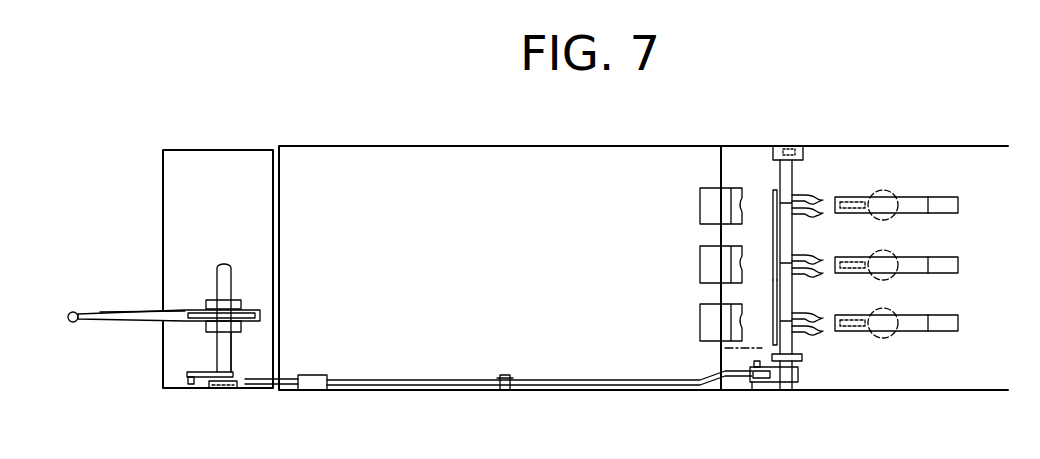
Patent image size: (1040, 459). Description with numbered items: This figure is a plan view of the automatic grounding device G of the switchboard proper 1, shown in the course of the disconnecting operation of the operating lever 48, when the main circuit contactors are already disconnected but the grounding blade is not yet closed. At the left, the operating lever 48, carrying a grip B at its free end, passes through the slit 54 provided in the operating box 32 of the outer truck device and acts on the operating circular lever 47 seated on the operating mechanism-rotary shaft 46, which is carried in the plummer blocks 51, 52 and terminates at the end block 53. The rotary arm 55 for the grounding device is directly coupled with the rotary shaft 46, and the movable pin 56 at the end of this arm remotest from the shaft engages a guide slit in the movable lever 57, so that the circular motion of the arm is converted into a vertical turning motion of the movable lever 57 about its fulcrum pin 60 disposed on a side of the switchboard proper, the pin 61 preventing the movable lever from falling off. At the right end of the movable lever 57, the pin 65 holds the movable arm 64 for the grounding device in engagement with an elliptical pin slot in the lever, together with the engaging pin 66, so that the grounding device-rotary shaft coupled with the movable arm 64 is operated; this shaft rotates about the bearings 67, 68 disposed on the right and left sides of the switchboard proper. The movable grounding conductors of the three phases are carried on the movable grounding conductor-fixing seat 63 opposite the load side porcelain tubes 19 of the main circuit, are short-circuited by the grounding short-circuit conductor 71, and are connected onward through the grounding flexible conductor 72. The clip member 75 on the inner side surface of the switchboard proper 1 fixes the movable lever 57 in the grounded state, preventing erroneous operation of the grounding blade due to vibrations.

The switchboard proper 1 is at (470, 146).
The operating box 32 is at (163, 218).
The plummer block 51 is at (214, 300).
The operating circular lever 47 is at (242, 309).
The slit 54 is at (185, 312).
The operating lever 48 is at (115, 322).
The ball knob B is at (52, 317).
The plummer block 52 is at (210, 333).
The operating mechanism-rotary shaft 46 is at (235, 333).
The rotary arm for the grounding device 55 is at (187, 375).
The movable pin for the grounding device 56 is at (191, 384).
The end block 53 is at (234, 389).
The clip member for the grounded state 75 is at (327, 376).
The movable lever for the grounding device 57 is at (413, 380).
The fulcrum pin 60 is at (510, 380).
The pin for preventing the movable lever from falling off 61 is at (500, 378).
The grounding device G is at (585, 380).
The load side porcelain tube 19 is at (700, 212).
The bearing for the rotary shaft 68 is at (803, 152).
The movable grounding conductor-fixing seat 63 is at (792, 312).
The grounding short-circuit conductor 71 is at (773, 272).
The grounding flexible conductor 72 is at (770, 340).
The bearing for the rotary shaft 67 is at (803, 361).
The engaging pin 66 is at (752, 365).
The movable arm for the grounding device 64 is at (790, 392).
The pin for the engagement between the movable lever and the movable arm 65 is at (752, 392).